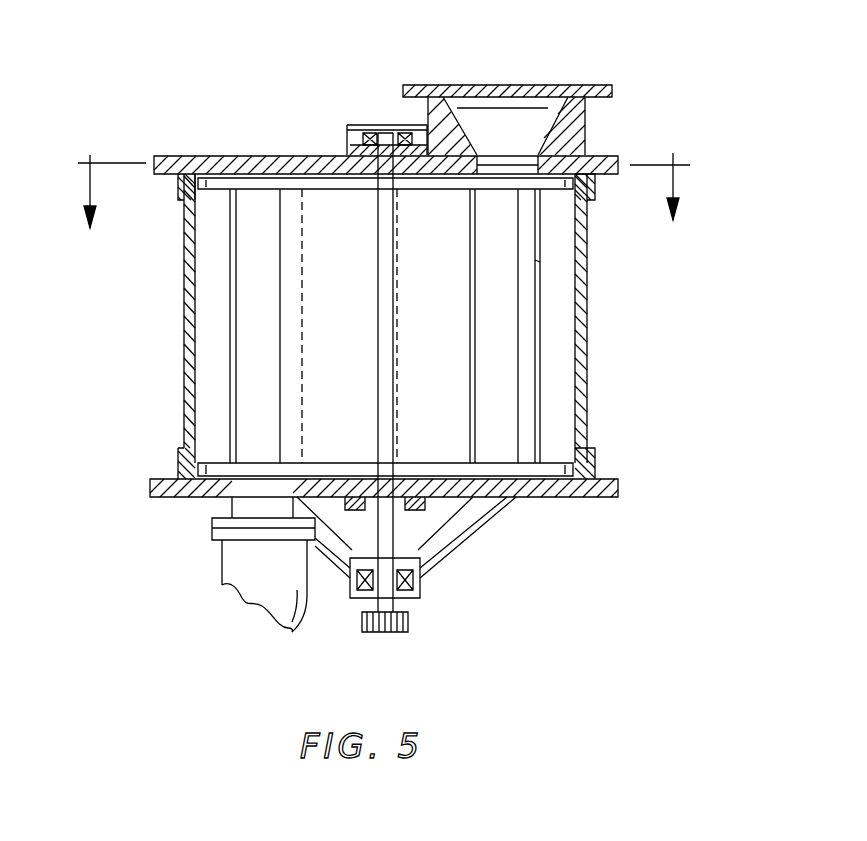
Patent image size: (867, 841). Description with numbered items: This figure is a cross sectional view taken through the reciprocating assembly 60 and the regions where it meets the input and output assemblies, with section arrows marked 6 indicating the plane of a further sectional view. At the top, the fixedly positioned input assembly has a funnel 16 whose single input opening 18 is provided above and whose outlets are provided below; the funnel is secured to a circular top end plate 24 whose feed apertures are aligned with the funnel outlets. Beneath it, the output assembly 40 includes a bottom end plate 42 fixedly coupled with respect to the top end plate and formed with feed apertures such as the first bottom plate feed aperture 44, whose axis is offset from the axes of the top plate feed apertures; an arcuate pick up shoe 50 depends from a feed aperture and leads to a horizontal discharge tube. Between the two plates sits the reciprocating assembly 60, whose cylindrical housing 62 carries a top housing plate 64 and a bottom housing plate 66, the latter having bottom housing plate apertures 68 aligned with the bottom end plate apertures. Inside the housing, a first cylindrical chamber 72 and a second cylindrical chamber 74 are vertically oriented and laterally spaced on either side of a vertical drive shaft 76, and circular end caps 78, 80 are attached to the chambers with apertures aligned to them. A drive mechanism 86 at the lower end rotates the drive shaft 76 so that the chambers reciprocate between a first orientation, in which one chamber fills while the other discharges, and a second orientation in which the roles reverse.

The section line 6- 6 is at (383, 178).
The funnel 16 is at (598, 120).
The single input opening 18 is at (548, 84).
The circular top end plate 24 is at (615, 153).
The output assembly 40 is at (400, 506).
The bottom end plate 42 is at (555, 498).
The first bottom plate feed aperture 44 is at (240, 498).
The arcuate pick up shoe 50 is at (262, 592).
The reciprocating assembly 60 is at (407, 318).
The cylindrical housing 62 is at (184, 335).
The top housing plate 64 is at (155, 176).
The bottom housing plate 66 is at (606, 479).
The bottom housing plate apertures 68 is at (245, 478).
The first cylindrical chamber 72 is at (230, 293).
The second cylindrical chamber 74 is at (541, 262).
The drive shaft 76 is at (378, 206).
The circular end cap 78 is at (200, 186).
The circular end cap 80 is at (574, 444).
The drive mechanism 86 is at (408, 622).